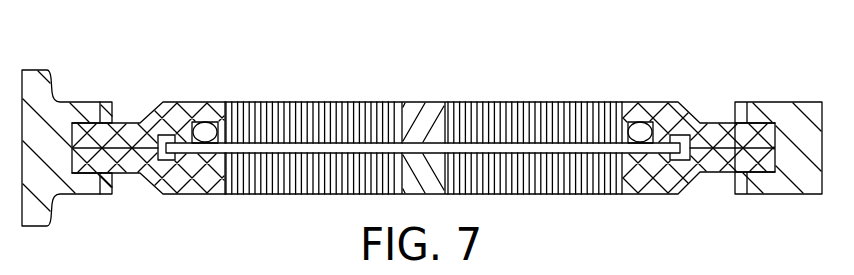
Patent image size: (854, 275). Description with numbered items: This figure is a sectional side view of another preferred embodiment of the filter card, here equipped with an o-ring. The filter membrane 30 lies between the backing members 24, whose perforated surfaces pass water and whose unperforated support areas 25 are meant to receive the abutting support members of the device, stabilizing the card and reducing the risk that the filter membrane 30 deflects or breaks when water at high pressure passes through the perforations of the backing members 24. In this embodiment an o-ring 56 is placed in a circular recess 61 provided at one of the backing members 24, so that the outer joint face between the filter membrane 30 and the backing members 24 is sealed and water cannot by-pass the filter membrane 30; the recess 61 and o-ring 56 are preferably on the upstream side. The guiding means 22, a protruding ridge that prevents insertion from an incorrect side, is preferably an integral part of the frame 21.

The frame 21 is at (803, 101).
The guiding means 22 is at (37, 70).
The backing members 24 is at (535, 101).
The support areas 25 is at (424, 101).
The filter membrane 30 is at (640, 153).
The o-ring 56 is at (643, 122).
The circular recess 61 is at (202, 122).